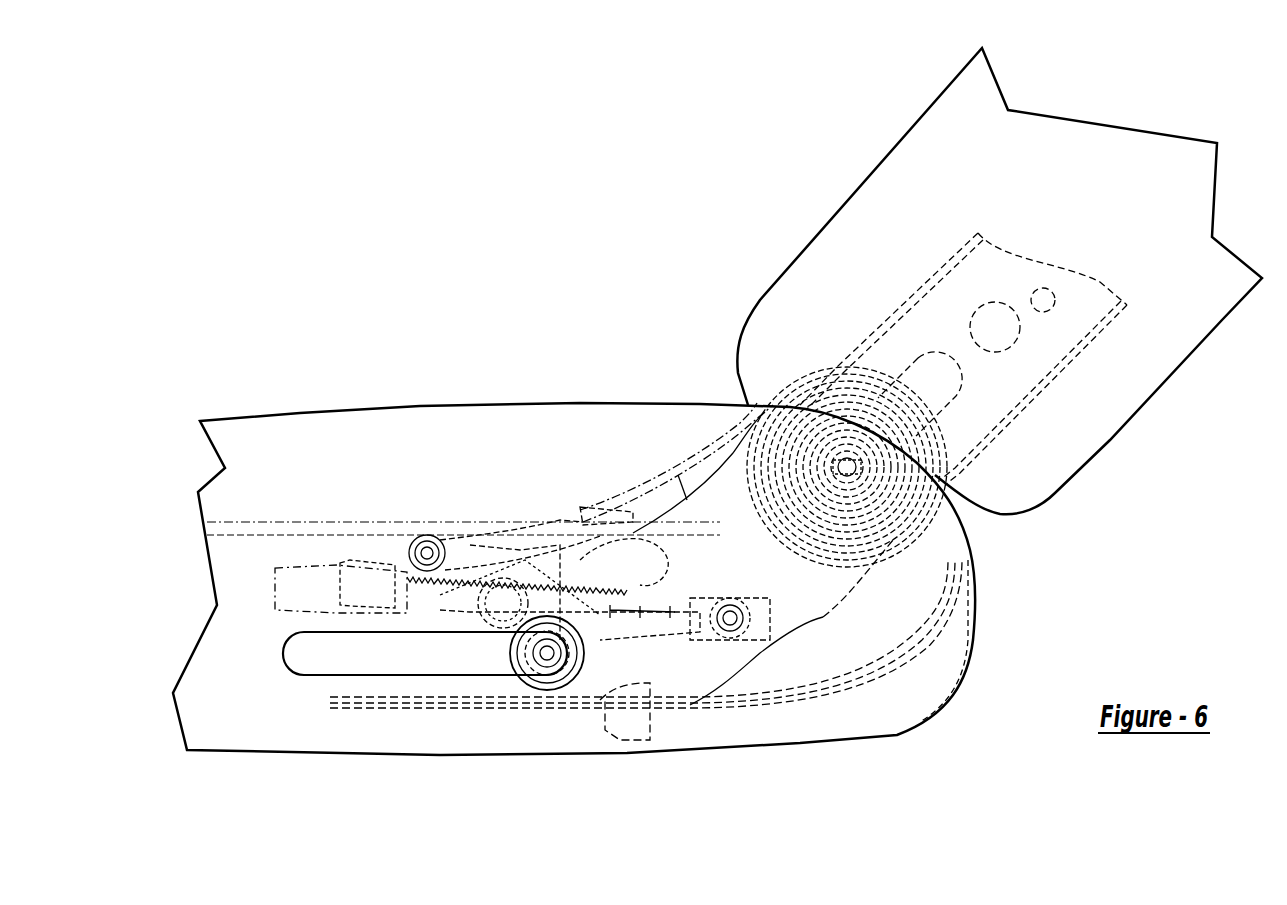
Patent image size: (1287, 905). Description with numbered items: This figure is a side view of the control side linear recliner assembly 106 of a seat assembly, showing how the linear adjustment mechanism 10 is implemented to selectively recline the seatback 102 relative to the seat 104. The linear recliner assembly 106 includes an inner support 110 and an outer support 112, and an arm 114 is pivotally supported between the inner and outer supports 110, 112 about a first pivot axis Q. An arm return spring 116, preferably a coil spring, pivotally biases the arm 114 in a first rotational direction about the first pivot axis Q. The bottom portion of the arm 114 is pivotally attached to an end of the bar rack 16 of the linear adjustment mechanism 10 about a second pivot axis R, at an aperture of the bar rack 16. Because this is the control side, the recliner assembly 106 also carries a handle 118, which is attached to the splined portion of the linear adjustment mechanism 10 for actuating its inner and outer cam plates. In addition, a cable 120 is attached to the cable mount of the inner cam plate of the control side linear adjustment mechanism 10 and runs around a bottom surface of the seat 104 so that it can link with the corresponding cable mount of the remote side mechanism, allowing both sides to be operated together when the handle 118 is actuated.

The linear adjustment mechanism 10 is at (543, 713).
The bar rack 16 is at (290, 585).
The seatback 102 is at (970, 143).
The seat 104 is at (247, 437).
The control side linear recliner assembly 106 is at (422, 510).
The inner support 110 is at (892, 640).
The outer support 112 is at (923, 682).
The arm 114 is at (1080, 315).
The arm return spring 116 is at (912, 493).
The handle 118 is at (397, 652).
The cable 120 is at (317, 530).
The first pivot axis Q is at (849, 472).
The second pivot axis R is at (730, 622).